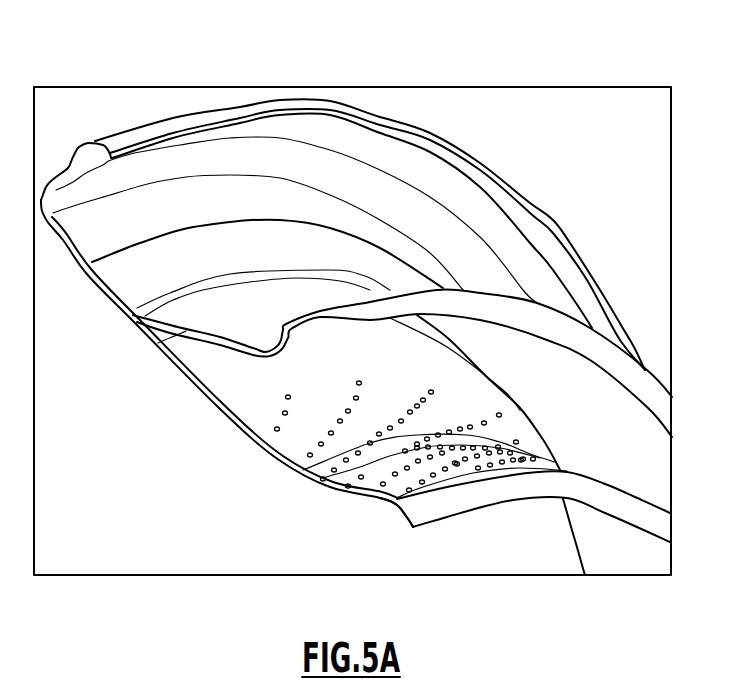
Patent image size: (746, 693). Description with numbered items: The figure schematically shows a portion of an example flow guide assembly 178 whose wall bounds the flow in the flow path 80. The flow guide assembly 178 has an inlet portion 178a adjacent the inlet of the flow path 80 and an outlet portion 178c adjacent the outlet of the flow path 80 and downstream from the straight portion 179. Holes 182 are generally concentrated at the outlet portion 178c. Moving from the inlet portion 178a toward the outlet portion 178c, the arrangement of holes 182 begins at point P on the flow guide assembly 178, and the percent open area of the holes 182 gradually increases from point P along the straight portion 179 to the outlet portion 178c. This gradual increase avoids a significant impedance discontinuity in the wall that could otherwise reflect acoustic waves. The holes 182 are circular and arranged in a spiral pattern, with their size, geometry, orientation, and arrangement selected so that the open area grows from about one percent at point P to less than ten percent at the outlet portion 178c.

The inlet portion 178a is at (142, 80).
The flow guide assembly 178 is at (261, 104).
The outlet portion 178c is at (503, 588).
The straight portion 179 is at (351, 527).
The holes 182 is at (361, 396).
The flow path 80 is at (193, 488).
The point P is at (222, 410).